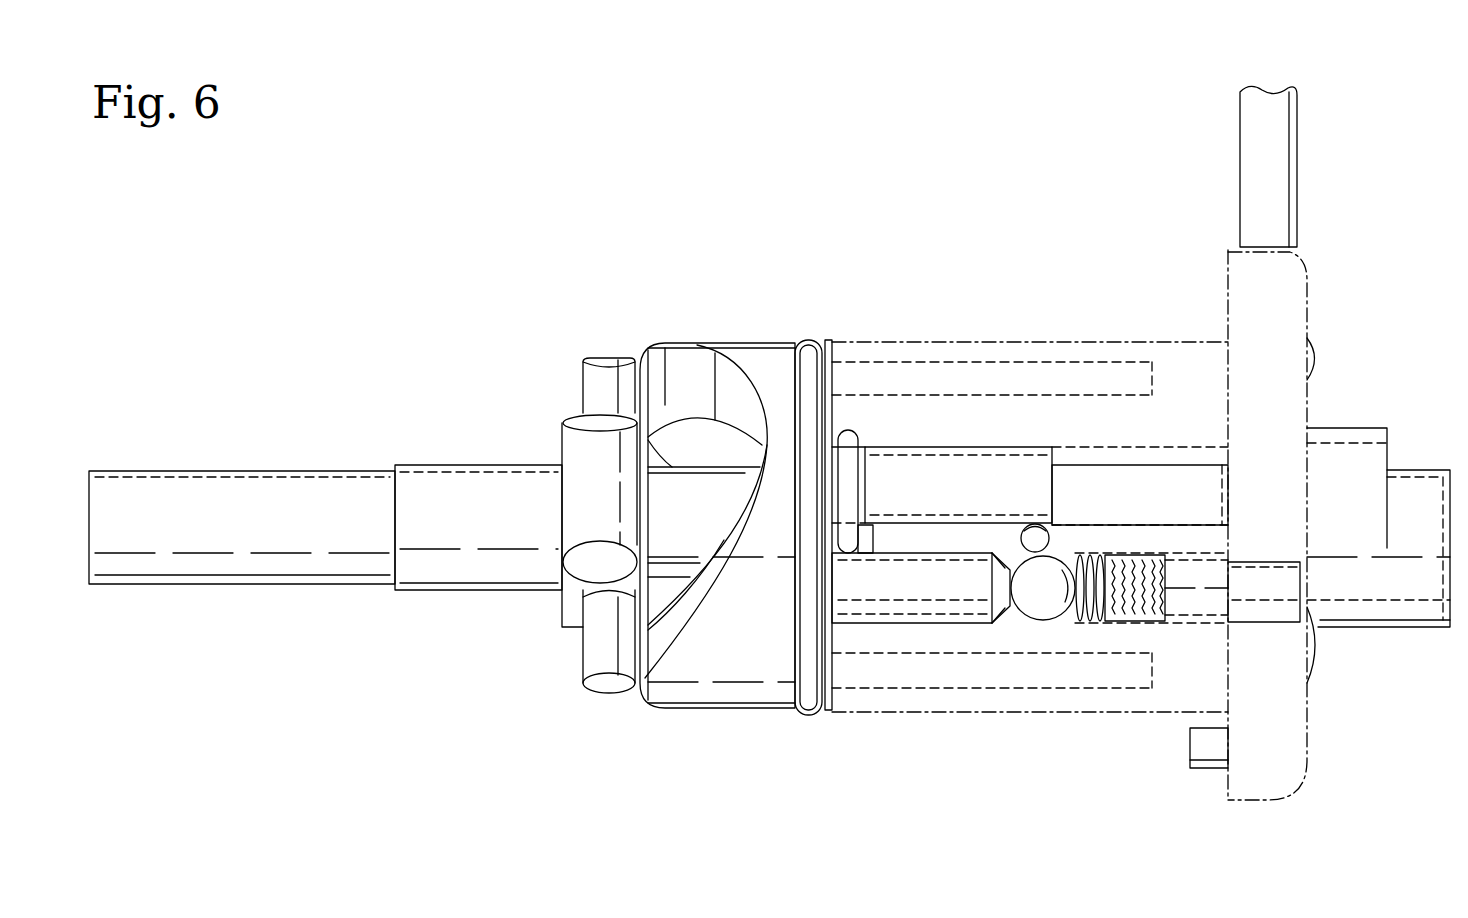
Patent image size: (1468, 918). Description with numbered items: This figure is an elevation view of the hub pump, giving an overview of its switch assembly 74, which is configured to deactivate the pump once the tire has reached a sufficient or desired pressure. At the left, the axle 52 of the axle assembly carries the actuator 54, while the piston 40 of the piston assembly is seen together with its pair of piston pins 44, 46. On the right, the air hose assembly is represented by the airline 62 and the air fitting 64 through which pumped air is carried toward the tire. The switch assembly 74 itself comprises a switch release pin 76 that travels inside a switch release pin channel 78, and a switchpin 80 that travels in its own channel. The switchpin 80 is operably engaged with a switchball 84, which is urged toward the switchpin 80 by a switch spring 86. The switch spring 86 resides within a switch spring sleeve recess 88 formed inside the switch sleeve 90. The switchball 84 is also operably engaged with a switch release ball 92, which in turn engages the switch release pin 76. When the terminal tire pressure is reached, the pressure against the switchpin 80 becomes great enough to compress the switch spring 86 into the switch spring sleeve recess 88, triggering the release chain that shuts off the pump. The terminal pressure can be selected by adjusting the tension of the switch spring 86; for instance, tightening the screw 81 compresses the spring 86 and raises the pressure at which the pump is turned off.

The piston 40 is at (740, 342).
The piston pin 44 is at (900, 712).
The second piston pin 46 is at (900, 362).
The axle 52 is at (232, 470).
The actuator 54 is at (583, 392).
The airline 62 is at (1240, 168).
The air fitting 64 is at (1292, 256).
The switch assembly 74 is at (818, 243).
The switch release pin 76 is at (917, 447).
The switch release pin channel 78 is at (1155, 462).
The switchpin 80 is at (900, 625).
The screw 81 is at (1320, 650).
The switchball 84 is at (1043, 600).
The switch spring 86 is at (1088, 620).
The switch spring sleeve recess 88 is at (1140, 617).
The switch sleeve 90 is at (1275, 625).
The switch release ball 92 is at (1033, 535).